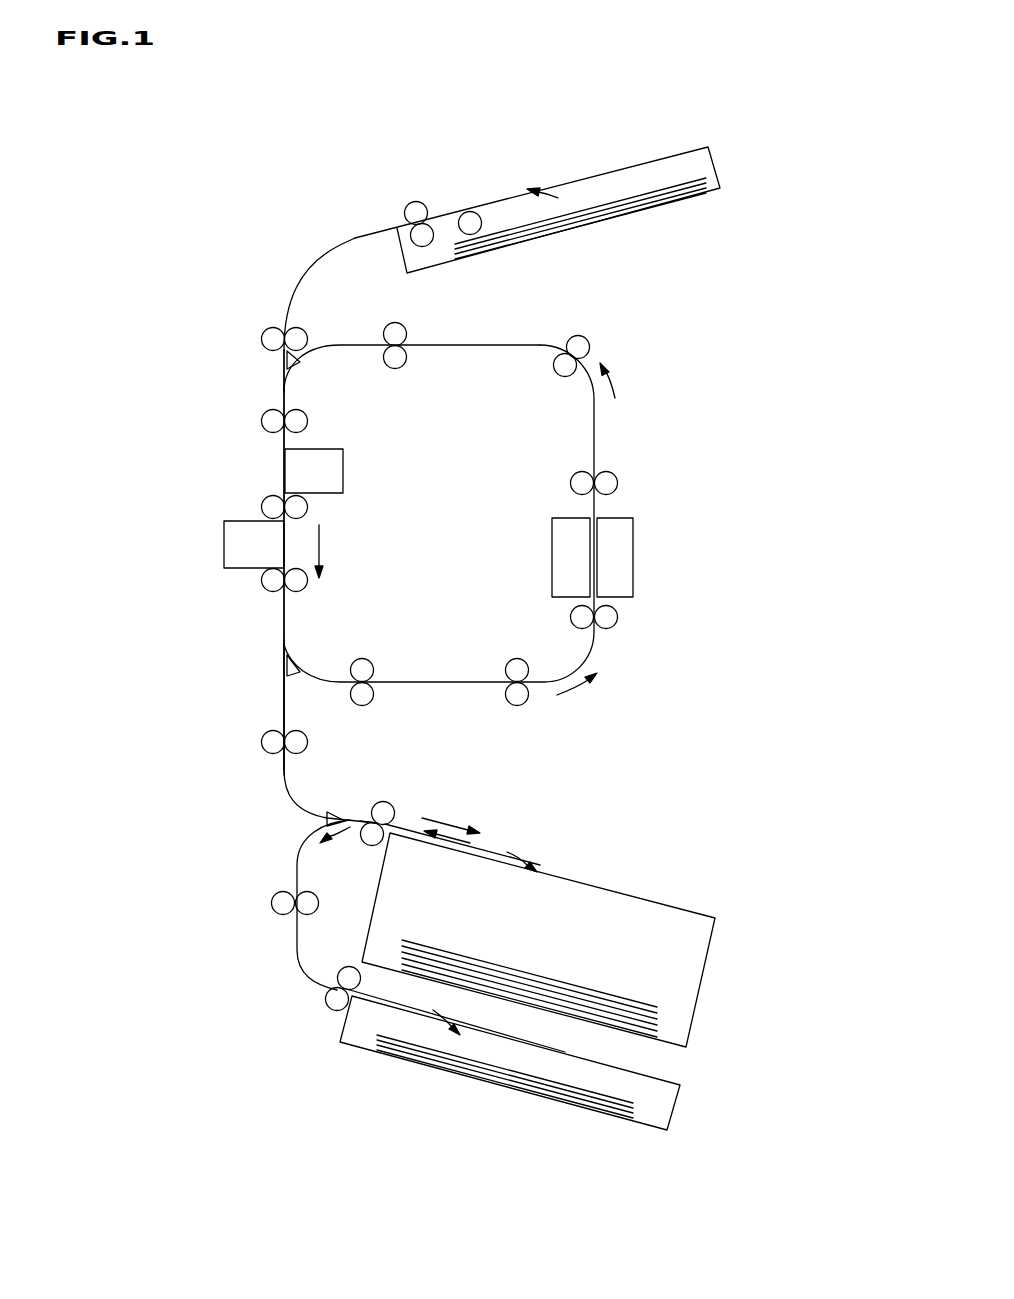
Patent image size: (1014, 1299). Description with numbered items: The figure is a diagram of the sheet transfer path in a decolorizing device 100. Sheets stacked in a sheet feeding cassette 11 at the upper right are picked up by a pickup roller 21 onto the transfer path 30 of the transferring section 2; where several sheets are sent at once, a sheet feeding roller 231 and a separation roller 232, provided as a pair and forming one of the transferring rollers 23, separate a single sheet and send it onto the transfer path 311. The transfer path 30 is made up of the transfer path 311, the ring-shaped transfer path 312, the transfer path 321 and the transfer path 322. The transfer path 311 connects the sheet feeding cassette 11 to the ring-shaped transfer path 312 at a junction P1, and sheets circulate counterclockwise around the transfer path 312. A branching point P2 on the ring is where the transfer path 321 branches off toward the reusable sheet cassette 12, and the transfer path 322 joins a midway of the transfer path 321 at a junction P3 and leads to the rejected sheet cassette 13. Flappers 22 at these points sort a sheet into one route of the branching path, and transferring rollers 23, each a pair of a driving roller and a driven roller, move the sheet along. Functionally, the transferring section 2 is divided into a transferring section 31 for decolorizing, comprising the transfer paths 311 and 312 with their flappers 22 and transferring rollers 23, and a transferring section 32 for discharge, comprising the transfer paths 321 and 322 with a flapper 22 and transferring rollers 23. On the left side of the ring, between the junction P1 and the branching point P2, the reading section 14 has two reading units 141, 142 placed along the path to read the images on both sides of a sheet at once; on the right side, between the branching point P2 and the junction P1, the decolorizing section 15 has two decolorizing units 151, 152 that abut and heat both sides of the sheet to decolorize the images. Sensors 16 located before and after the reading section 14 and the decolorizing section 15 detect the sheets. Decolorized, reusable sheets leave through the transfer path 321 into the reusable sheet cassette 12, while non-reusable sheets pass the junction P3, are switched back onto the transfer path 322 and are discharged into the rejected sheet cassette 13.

The decolorizing device 100 is at (418, 123).
The sheet feeding cassette 11 is at (575, 182).
The pickup roller 21 is at (470, 211).
The sheet feeding roller 231 is at (417, 202).
The separation roller 232 is at (421, 247).
The transfer path 30 is at (324, 243).
The transfer path 311 is at (300, 287).
The transfer path 312 is at (468, 344).
The transferring section for decolorizing 31 is at (203, 377).
The transferring section 2 is at (653, 363).
The transferring section for discharge 32 is at (210, 756).
The transfer path 321 is at (284, 703).
The transfer path 322 is at (297, 875).
The transferring roller 23 is at (263, 333).
The flapper 22 is at (300, 362).
The sensor 16 is at (299, 402).
The junction P1 is at (284, 388).
The branching point P2 is at (284, 642).
The junction P3 is at (366, 818).
The reading section 14 is at (163, 547).
The reading unit 142 is at (288, 468).
The reading unit 141 is at (224, 540).
The decolorizing section 15 is at (688, 572).
The decolorizing unit 152 is at (586, 536).
The decolorizing unit 151 is at (626, 562).
The reusable sheet cassette 12 is at (572, 886).
The rejected sheet cassette 13 is at (538, 1098).